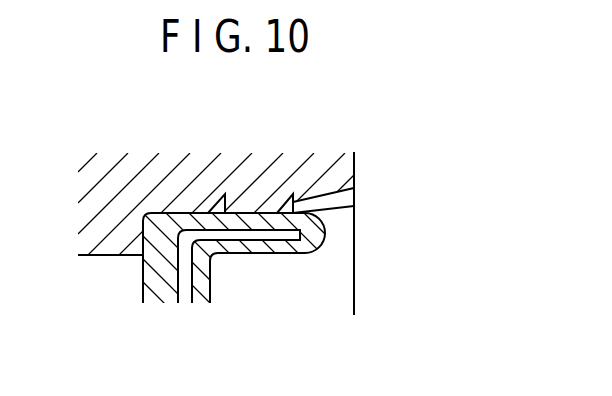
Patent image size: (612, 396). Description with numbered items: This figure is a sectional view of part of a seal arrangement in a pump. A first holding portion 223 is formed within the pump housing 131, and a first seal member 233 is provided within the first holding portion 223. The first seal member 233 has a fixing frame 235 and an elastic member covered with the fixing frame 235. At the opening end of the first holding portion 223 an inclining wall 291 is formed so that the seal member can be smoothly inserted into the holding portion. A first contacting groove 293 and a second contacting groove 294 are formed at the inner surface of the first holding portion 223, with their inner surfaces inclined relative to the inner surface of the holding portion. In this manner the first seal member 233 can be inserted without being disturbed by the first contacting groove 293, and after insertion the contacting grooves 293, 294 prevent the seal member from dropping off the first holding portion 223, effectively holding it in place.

The pump housing 131 is at (347, 163).
The first holding portion 223 is at (248, 212).
The first seal member 233 is at (272, 254).
The fixing frame 235 is at (240, 255).
The inclining wall 291 is at (340, 214).
The first contacting groove 293 is at (213, 205).
The second contacting groove 294 is at (355, 188).